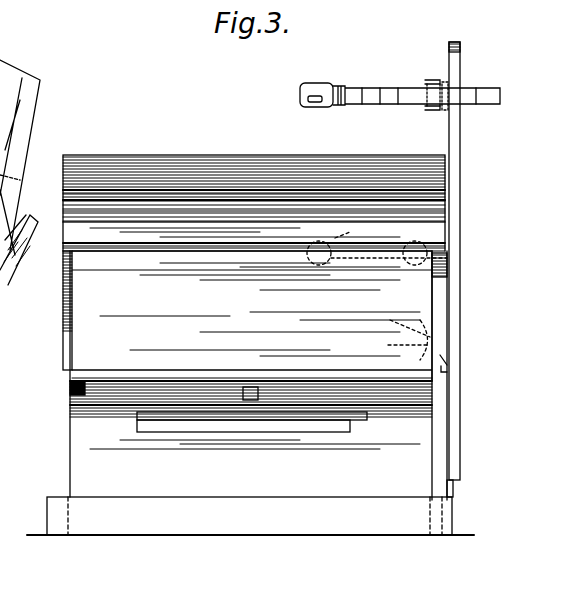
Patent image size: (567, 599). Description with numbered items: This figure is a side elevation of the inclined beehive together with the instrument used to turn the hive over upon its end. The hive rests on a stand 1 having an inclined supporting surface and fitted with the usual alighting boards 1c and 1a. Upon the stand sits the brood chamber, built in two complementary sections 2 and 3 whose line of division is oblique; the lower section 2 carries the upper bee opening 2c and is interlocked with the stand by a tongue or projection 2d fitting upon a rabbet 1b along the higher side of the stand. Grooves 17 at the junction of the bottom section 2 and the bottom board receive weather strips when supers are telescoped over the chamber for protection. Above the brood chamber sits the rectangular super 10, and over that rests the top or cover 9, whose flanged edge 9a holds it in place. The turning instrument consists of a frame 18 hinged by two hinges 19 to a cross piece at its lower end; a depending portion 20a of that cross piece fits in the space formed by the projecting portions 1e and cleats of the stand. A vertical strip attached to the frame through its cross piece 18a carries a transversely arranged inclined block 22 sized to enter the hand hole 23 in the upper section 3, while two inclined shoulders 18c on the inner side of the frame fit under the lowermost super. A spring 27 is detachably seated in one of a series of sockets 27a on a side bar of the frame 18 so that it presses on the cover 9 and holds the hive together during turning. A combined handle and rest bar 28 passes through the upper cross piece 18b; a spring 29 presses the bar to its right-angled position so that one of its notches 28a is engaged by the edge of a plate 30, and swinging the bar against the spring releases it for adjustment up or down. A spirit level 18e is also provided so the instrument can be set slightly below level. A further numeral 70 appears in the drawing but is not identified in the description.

The stand 1 is at (92, 468).
The alighting board 1a is at (262, 410).
The rabbet 1b is at (82, 400).
The alighting board 1c is at (3, 512).
The projecting portions 1e is at (450, 515).
The lower section of brood chamber 2 is at (95, 320).
The upper bee opening 2c is at (130, 386).
The tongue or projection 2d is at (85, 388).
The upper section of brood chamber 3 is at (160, 262).
The top or cover 9 is at (155, 153).
The flanged edge 9a is at (206, 183).
The super 10 is at (82, 228).
The grooves 17 is at (70, 381).
The frame 18 is at (457, 153).
The cross piece of frame 18a is at (0, 405).
The upper end or cross piece 18b is at (462, 43).
The inclined shoulders 18c is at (458, 358).
The spirit level 18e is at (12, 136).
The hinges 19 is at (453, 490).
The depending portion 20a is at (435, 486).
The inclined block 22 is at (394, 332).
The hand hole 23 is at (394, 348).
The spring 27 is at (0, 232).
The sockets 27a is at (8, 252).
The bar or strip 28 is at (354, 88).
The notches 28a is at (395, 96).
The spring 29 is at (431, 108).
The plate 30 is at (442, 96).
The lever 70 is at (63, 350).